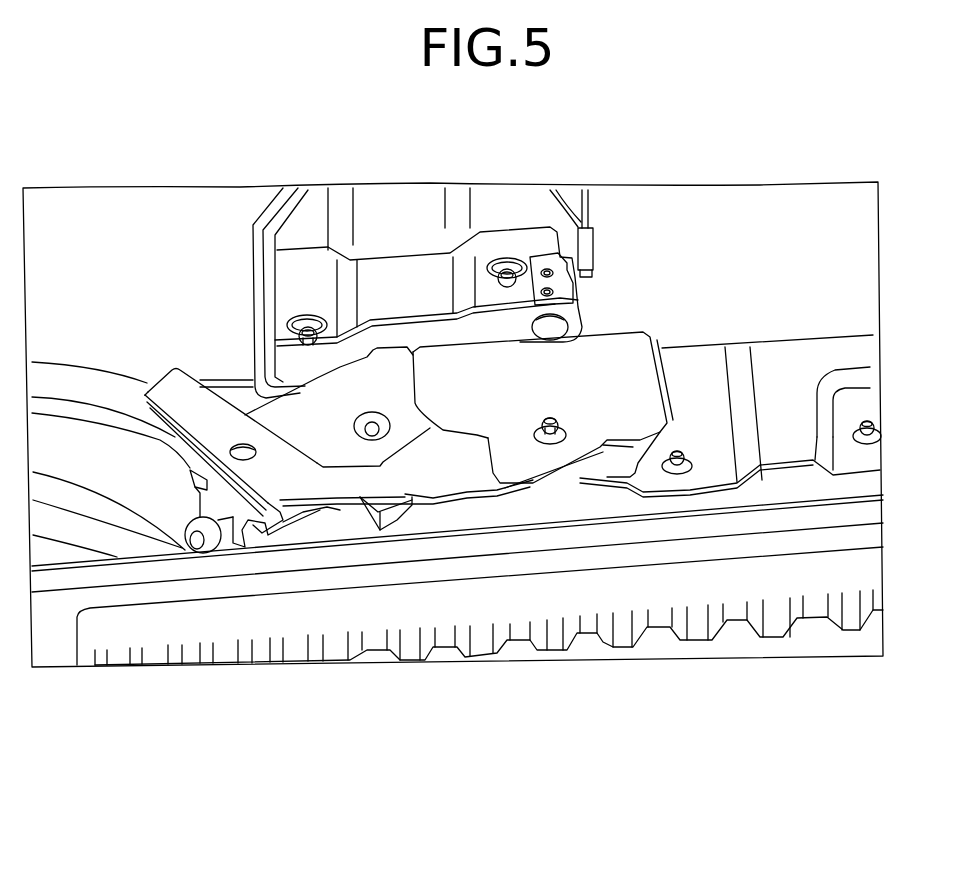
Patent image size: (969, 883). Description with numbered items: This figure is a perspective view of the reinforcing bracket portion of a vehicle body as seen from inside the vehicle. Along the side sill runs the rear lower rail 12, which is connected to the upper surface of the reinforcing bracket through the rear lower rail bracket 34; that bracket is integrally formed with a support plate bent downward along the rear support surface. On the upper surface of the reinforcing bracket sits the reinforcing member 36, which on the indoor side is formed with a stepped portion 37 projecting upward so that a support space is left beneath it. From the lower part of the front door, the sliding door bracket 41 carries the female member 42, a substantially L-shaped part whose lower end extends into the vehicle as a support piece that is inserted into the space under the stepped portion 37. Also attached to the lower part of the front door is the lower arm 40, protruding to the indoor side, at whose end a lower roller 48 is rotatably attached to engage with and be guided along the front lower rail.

The rear lower rail 12 is at (97, 387).
The lower arm 40 is at (312, 417).
The sliding door bracket 41 is at (410, 253).
The female member 42 is at (510, 377).
The stepped portion 37 is at (582, 232).
The rear lower rail bracket 34 is at (350, 480).
The reinforcing member 36 is at (540, 463).
The lower roller 48 is at (217, 535).